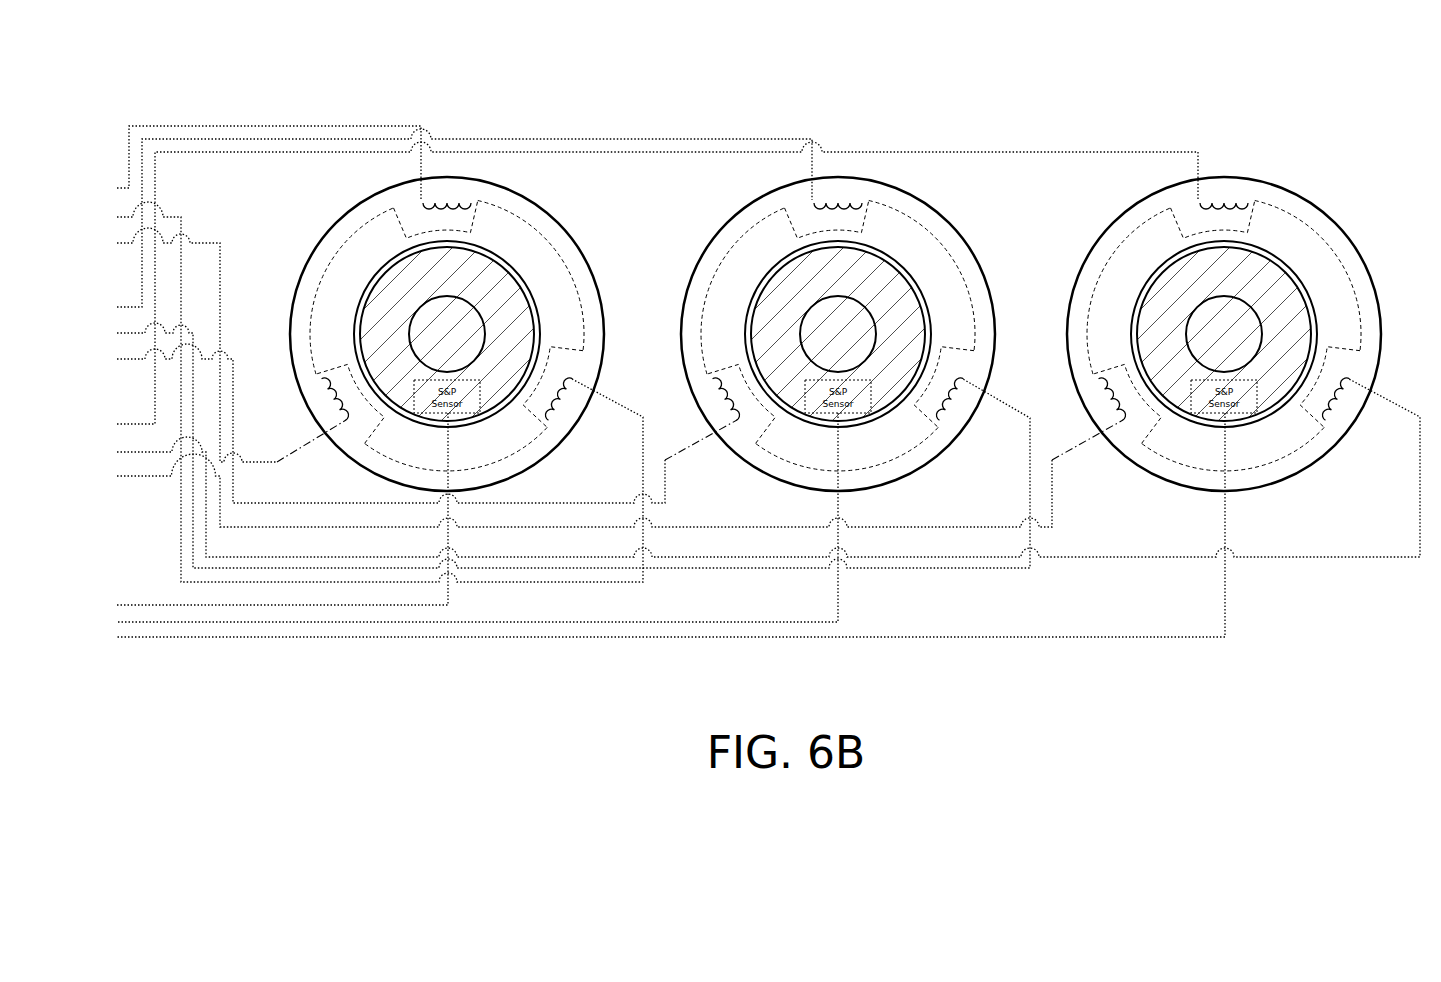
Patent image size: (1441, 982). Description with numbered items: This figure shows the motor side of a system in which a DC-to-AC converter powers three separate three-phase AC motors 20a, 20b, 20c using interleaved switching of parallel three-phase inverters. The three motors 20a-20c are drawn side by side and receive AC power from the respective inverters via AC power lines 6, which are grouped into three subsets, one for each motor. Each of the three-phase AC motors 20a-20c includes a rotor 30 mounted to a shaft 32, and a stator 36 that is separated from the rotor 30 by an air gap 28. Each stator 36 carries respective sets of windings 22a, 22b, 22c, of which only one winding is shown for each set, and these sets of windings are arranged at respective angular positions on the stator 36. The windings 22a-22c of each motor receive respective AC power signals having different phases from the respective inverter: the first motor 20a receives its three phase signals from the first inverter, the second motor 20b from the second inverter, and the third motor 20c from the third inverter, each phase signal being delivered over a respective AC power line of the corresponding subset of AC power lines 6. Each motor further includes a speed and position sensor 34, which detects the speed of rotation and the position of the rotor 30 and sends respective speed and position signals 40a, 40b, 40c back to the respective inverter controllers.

The AC power lines 6 is at (263, 120).
The 3-phase AC motor 20a is at (333, 217).
The 3-phase AC motor 20b is at (960, 232).
The 3-phase AC motor 20c is at (1272, 178).
The winding 22a is at (443, 202).
The winding 22b is at (556, 415).
The winding 22c is at (322, 382).
The air gap 28 is at (541, 325).
The rotor 30 is at (370, 292).
The shaft 32 is at (455, 300).
The speed and position sensor 34 is at (440, 414).
The stator 36 is at (547, 455).
The speed and position signal 40a is at (448, 590).
The speed and position signal 40b is at (839, 608).
The speed and position signal 40c is at (1226, 620).